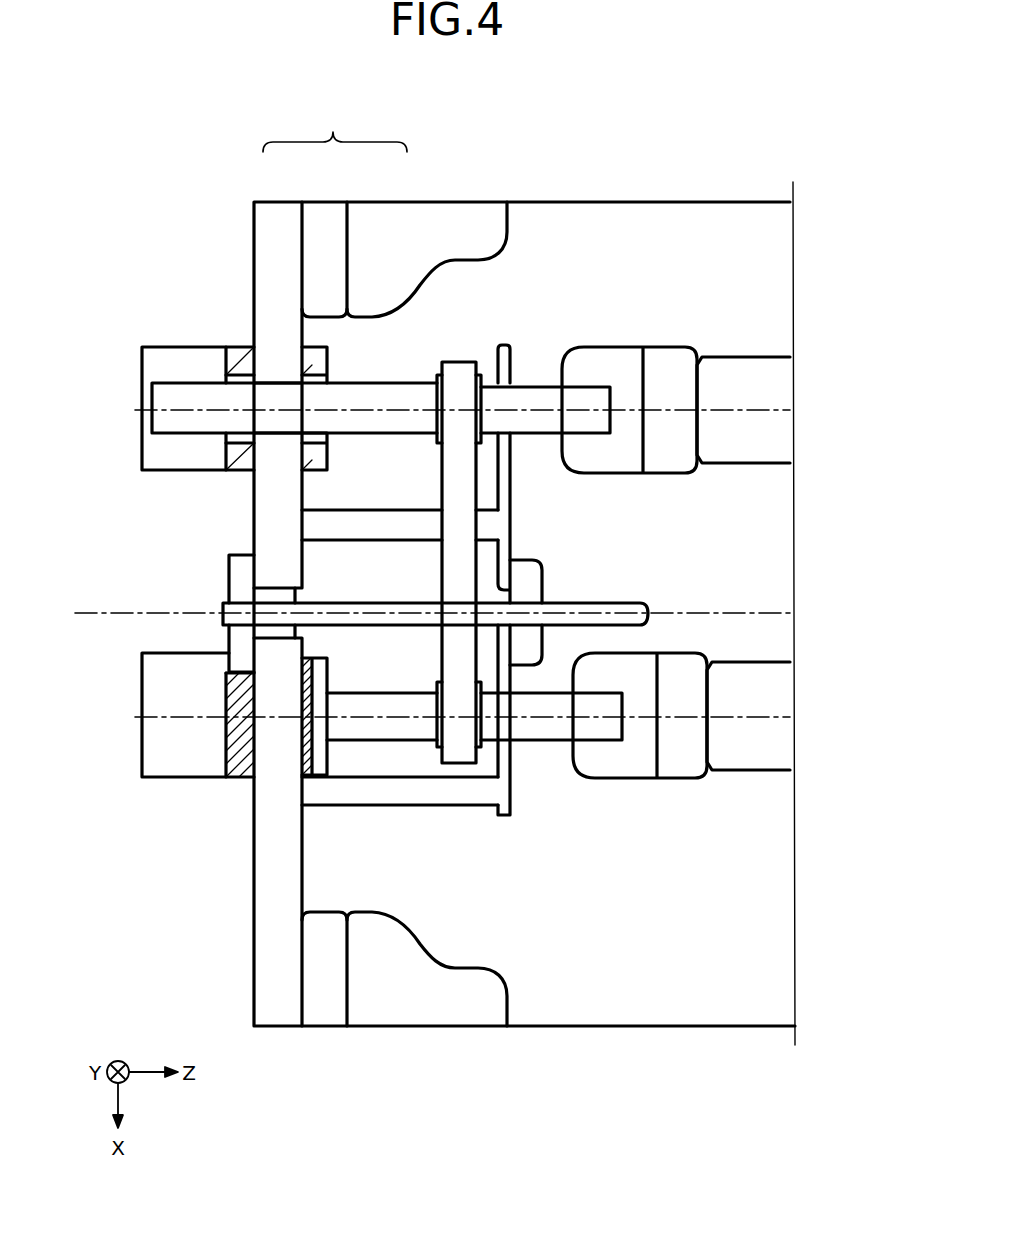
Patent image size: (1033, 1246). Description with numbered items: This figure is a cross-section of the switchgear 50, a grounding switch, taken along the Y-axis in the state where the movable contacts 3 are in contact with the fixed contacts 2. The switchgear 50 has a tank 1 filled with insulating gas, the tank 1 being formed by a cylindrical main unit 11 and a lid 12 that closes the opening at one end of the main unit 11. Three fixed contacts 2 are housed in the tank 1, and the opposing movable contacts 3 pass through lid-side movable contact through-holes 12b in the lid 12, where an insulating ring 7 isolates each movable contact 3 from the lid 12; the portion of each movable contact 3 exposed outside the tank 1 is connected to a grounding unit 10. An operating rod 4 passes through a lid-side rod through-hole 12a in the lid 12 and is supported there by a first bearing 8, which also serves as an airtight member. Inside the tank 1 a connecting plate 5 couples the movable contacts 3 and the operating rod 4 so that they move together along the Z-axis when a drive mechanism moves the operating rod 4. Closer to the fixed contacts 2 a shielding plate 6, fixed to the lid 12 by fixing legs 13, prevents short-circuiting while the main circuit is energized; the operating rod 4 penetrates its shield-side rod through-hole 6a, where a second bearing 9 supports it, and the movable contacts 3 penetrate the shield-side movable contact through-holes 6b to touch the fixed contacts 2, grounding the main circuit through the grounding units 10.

The tank 1 is at (335, 129).
The fixed contact 2 is at (613, 347).
The movable contact 3 is at (544, 387).
The operating rod 4 is at (378, 583).
The connecting plate 5 is at (460, 364).
The shielding plate 6 is at (504, 345).
The shield-side rod through-hole 6a is at (500, 587).
The shield-side movable contact through-hole 6b is at (510, 437).
The insulating ring 7 is at (240, 353).
The first bearing 8 is at (267, 597).
The second bearing 9 is at (530, 568).
The grounding unit 10 is at (190, 353).
The main unit 11 is at (392, 218).
The lid 12 is at (282, 220).
The lid-side rod through-hole 12a is at (273, 633).
The lid-side movable contact through-hole 12b is at (277, 377).
The fixing leg 13 is at (496, 506).
The switchgear 50 is at (658, 170).